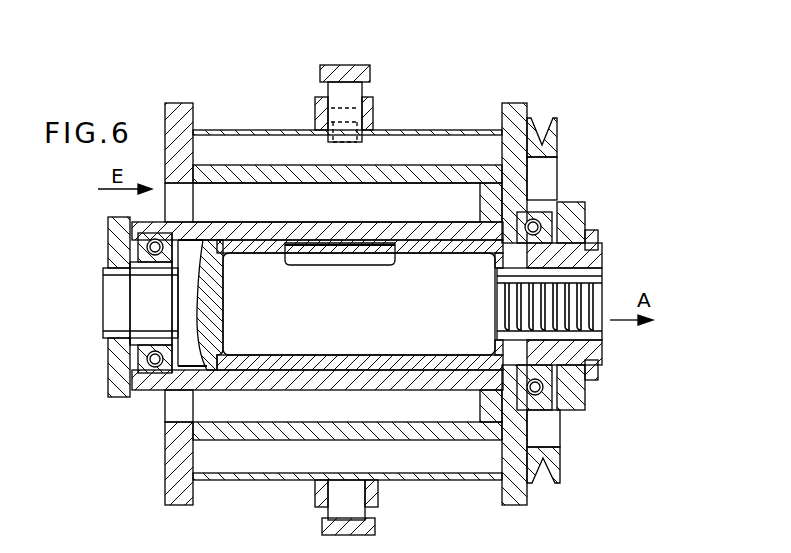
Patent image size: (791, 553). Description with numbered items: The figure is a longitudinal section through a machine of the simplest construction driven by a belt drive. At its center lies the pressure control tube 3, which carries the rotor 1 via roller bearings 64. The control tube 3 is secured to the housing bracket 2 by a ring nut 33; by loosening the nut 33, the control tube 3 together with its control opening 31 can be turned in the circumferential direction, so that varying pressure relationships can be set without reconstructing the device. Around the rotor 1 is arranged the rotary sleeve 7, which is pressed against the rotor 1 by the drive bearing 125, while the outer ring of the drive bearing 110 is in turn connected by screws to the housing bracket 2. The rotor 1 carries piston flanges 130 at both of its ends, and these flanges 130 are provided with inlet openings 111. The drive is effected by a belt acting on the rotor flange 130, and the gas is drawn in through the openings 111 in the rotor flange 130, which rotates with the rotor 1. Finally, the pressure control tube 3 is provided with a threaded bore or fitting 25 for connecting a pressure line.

The rotor 1 is at (250, 175).
The housing bracket 2 is at (108, 385).
The pressure control tube 3 is at (252, 252).
The rotary sleeve 7 is at (450, 130).
The threaded bore or fitting 25 is at (497, 292).
The control opening 31 is at (352, 256).
The ring nut 33 is at (591, 230).
The roller bearings 64 is at (545, 222).
The drive bearing 110 is at (371, 73).
The inlet openings 111 is at (404, 200).
The drive bearing 125 is at (343, 108).
The piston flanges 130 is at (183, 103).